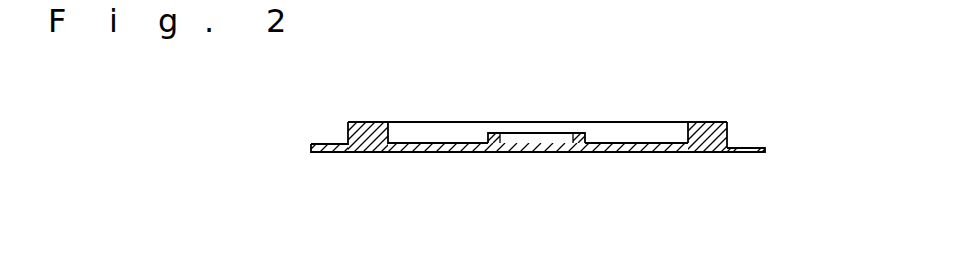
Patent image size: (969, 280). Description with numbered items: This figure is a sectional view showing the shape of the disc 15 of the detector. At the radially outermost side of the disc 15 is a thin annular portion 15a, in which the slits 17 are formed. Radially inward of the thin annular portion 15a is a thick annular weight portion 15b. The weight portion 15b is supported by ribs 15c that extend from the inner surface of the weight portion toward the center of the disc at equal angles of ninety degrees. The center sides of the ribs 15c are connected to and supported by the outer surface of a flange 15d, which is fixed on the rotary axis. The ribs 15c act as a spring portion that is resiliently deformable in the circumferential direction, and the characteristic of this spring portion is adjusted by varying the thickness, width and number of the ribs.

The disc 15 is at (463, 105).
The thin annular portion 15a is at (727, 179).
The thick annular weight portion 15b is at (672, 179).
The ribs 15c is at (672, 179).
The flange 15d is at (583, 148).
The slits 17 is at (747, 147).